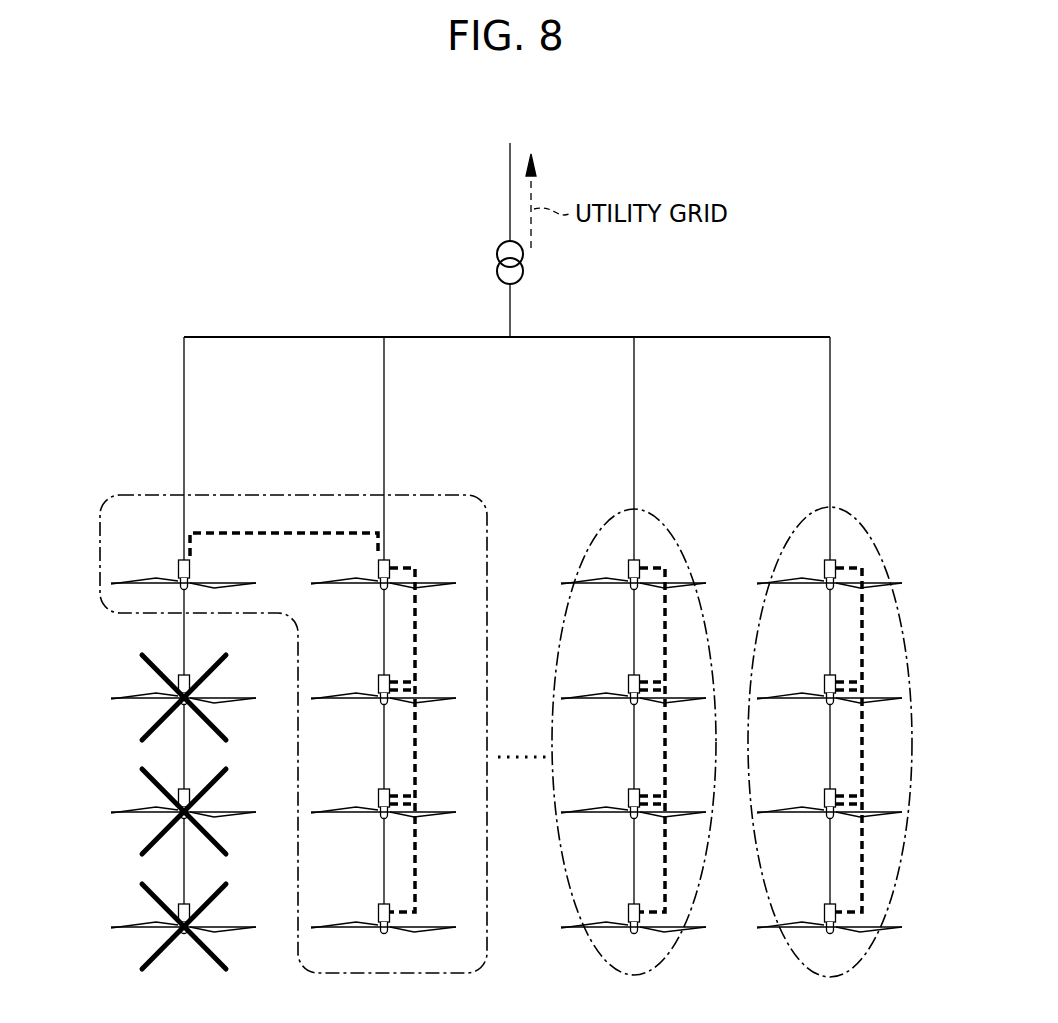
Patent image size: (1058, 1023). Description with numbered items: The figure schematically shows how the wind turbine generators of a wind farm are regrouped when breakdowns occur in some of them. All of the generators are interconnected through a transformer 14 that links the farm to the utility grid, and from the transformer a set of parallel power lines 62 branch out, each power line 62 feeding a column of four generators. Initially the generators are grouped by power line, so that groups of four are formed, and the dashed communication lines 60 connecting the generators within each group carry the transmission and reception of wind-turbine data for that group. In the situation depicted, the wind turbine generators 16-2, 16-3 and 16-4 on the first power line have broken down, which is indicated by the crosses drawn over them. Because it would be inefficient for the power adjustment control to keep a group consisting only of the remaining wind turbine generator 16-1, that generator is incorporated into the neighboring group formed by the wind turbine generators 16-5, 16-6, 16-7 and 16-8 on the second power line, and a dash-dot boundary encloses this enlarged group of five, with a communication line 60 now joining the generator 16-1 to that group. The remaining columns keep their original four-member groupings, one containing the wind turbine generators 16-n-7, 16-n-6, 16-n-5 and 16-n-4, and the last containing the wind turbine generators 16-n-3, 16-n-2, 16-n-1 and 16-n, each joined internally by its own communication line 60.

The transformer 14 is at (523, 271).
The power line 62 is at (184, 363).
The communication line 60 is at (278, 531).
The wind turbine generator 16-1 is at (154, 581).
The wind turbine generator 16-2 is at (142, 694).
The wind turbine generator 16-3 is at (142, 808).
The wind turbine generator 16-4 is at (142, 923).
The wind turbine generator 16-5 is at (353, 587).
The wind turbine generator 16-6 is at (351, 702).
The wind turbine generator 16-7 is at (356, 816).
The wind turbine generator 16-8 is at (344, 922).
The wind turbine generator 16-n-7 is at (604, 587).
The wind turbine generator 16-n-6 is at (599, 702).
The wind turbine generator 16-n-5 is at (604, 816).
The wind turbine generator 16-n-4 is at (592, 922).
The wind turbine generator 16-n-3 is at (800, 587).
The wind turbine generator 16-n-2 is at (795, 702).
The wind turbine generator 16-n-1 is at (800, 816).
The wind turbine generator 16-n is at (790, 922).